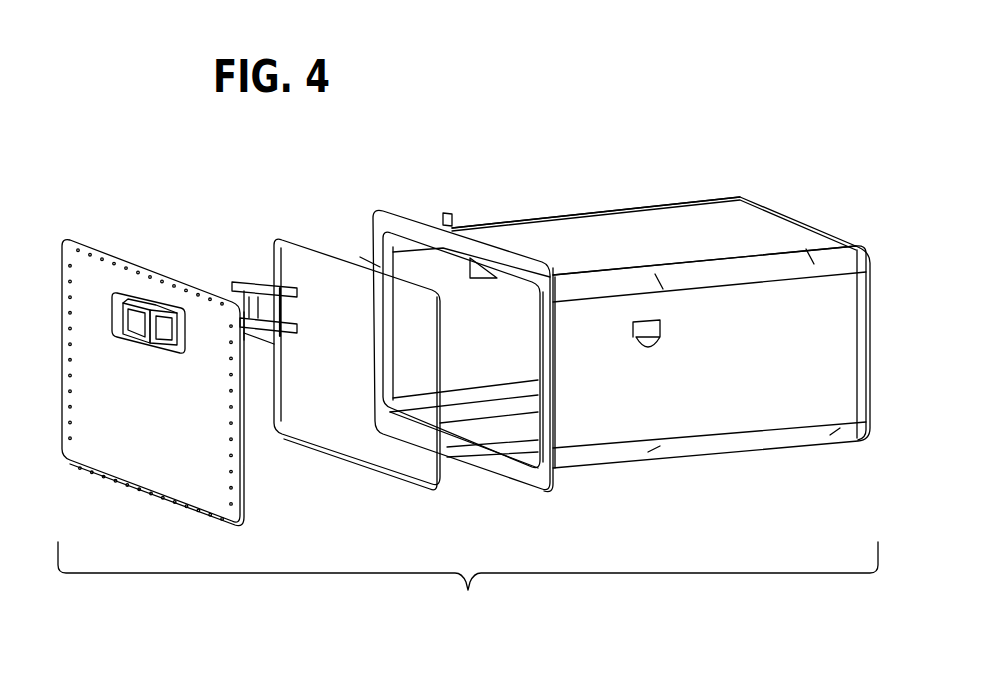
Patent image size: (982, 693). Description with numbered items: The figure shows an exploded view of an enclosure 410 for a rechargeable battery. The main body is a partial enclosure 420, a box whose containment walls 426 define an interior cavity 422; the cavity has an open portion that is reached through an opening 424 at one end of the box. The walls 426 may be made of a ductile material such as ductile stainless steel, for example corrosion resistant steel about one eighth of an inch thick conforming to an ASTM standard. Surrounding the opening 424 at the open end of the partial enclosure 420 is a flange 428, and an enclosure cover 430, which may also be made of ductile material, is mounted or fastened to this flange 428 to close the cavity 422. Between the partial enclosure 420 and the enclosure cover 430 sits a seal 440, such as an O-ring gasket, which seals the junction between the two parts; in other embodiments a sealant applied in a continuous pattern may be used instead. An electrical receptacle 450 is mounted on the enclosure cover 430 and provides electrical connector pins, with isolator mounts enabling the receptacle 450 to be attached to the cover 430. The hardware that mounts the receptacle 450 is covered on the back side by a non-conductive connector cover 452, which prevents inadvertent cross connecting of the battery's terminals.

The enclosure 410 is at (468, 584).
The partial enclosure 420 is at (773, 208).
The cavity 422 is at (530, 363).
The opening 424 is at (503, 448).
The containment walls 426 is at (582, 235).
The flange 428 is at (403, 211).
The enclosure cover 430 is at (161, 446).
The seal 440 is at (308, 241).
The electrical receptacle 450 is at (138, 302).
The connector cover 452 is at (248, 277).